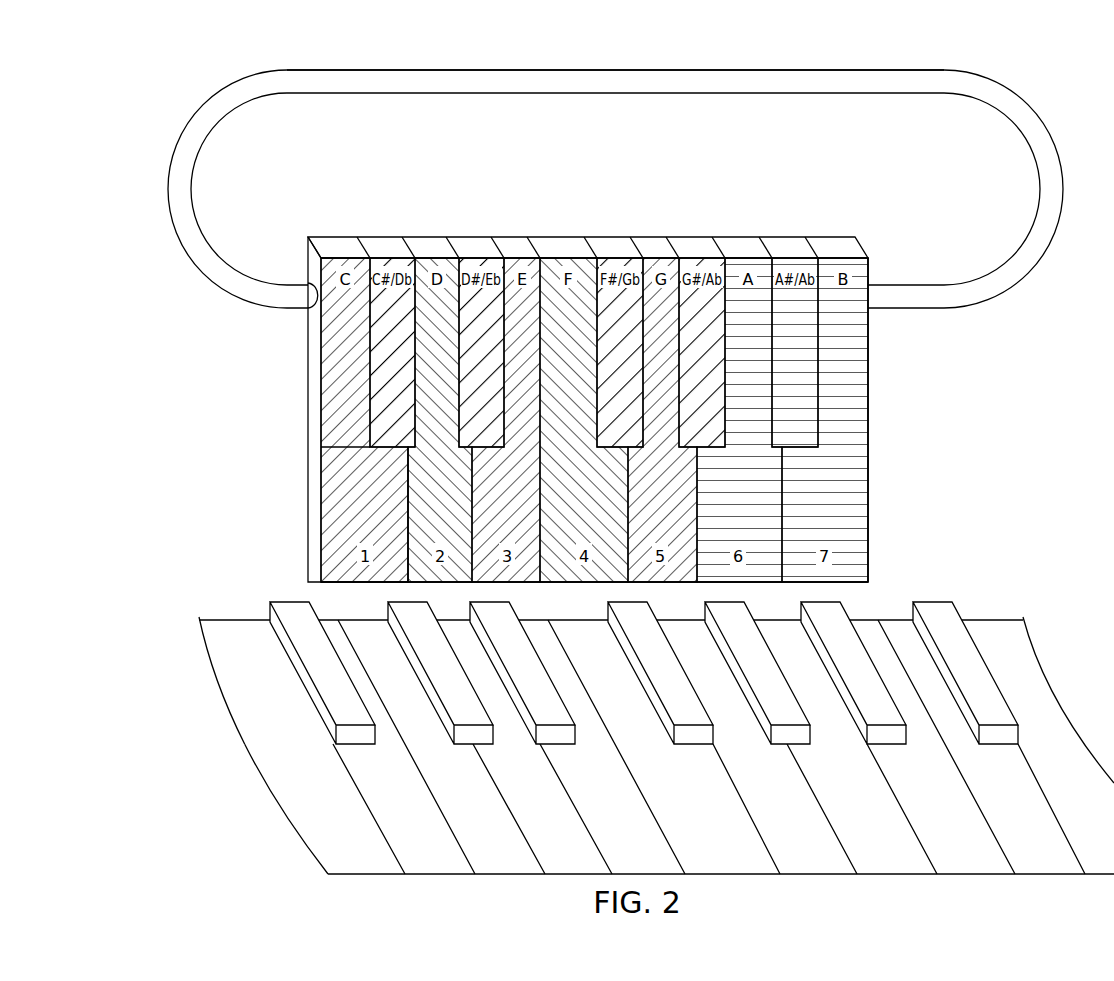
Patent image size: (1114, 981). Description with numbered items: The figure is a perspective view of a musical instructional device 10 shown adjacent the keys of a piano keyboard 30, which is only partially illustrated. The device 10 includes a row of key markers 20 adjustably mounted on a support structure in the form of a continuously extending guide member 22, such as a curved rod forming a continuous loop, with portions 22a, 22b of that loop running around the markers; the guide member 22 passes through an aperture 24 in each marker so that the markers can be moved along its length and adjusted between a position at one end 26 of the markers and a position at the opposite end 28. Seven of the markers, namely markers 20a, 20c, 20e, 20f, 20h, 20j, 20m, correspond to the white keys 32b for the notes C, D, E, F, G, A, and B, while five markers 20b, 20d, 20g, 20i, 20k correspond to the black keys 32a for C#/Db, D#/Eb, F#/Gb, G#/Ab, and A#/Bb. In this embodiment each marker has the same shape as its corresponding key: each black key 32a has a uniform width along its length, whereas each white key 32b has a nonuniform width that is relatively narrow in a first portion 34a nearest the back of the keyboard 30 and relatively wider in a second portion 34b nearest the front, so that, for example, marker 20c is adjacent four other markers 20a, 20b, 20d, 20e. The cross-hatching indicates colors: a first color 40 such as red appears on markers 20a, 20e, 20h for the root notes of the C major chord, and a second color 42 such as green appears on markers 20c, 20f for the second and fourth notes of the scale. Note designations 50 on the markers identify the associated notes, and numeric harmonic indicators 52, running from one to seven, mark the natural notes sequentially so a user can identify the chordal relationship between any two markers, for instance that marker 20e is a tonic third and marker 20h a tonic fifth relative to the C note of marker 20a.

The musical instructional device 10 is at (151, 121).
The key markers 20 is at (901, 195).
The key marker 20a is at (333, 243).
The key marker 20b is at (380, 243).
The key marker 20c is at (427, 243).
The key marker 20d is at (473, 243).
The key marker 20e is at (520, 243).
The key marker 20f is at (565, 243).
The key marker 20g is at (610, 243).
The key marker 20h is at (655, 243).
The key marker 20i is at (702, 243).
The key marker 20j is at (743, 243).
The key marker 20k is at (789, 243).
The key marker 20m is at (834, 243).
The guide member 22 is at (196, 204).
The guide member portion 22a is at (904, 283).
The guide member portion 22b is at (982, 74).
The aperture 24 is at (307, 309).
The one end of the markers 26 is at (255, 437).
The opposite end of the markers 28 is at (938, 418).
The piano keyboard 30 is at (193, 596).
The black keys 32a is at (315, 667).
The white keys 32b is at (377, 789).
The first portion 34a is at (241, 644).
The second portion 34b is at (342, 854).
The first color 40 is at (327, 458).
The second color 42 is at (404, 498).
The note designations 50 is at (321, 271).
The harmonic indicators 52 is at (326, 570).